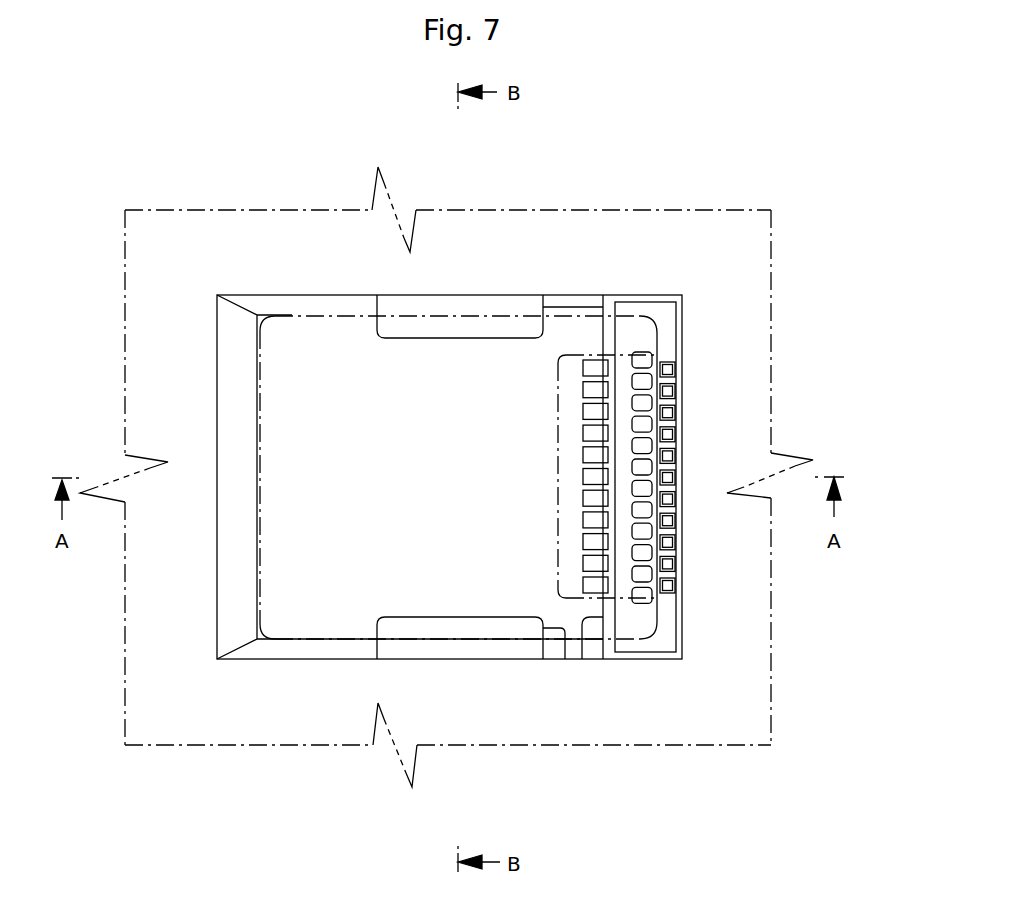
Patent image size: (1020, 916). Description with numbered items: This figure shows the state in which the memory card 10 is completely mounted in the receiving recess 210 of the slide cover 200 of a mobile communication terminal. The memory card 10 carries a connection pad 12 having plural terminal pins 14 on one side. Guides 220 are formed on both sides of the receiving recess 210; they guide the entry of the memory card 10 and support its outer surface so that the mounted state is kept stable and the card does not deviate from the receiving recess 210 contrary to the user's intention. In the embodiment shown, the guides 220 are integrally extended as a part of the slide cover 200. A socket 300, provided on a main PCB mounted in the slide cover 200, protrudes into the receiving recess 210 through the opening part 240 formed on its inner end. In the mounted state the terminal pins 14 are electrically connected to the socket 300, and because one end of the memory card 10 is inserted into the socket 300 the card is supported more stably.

The slide cover 200 is at (738, 252).
The receiving recess 210 is at (310, 300).
The memory card 10 is at (325, 640).
The connection pad 12 is at (558, 478).
The terminal pins 14 is at (585, 521).
The guides 220 is at (560, 307).
The opening part 240 is at (582, 660).
The socket 300 is at (663, 624).